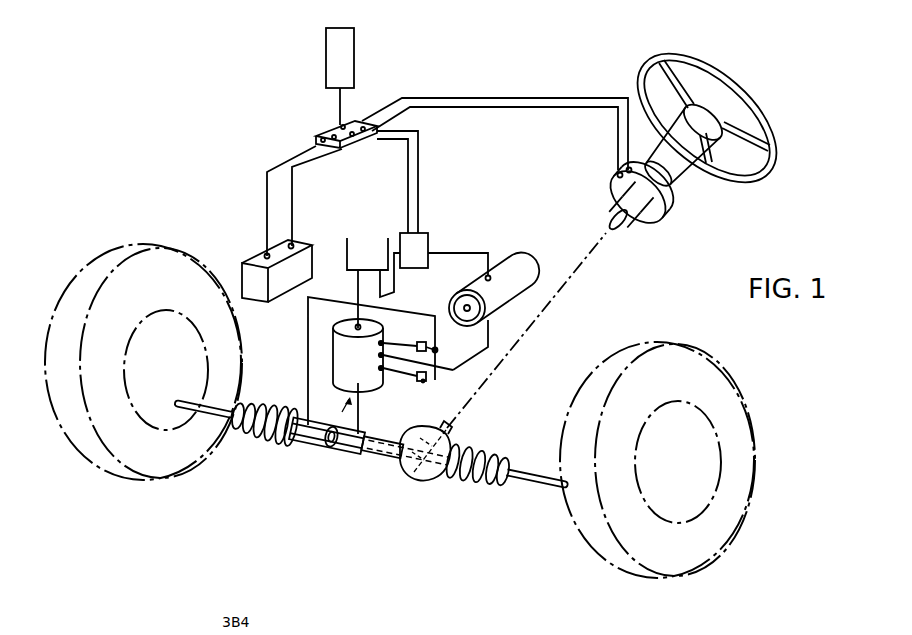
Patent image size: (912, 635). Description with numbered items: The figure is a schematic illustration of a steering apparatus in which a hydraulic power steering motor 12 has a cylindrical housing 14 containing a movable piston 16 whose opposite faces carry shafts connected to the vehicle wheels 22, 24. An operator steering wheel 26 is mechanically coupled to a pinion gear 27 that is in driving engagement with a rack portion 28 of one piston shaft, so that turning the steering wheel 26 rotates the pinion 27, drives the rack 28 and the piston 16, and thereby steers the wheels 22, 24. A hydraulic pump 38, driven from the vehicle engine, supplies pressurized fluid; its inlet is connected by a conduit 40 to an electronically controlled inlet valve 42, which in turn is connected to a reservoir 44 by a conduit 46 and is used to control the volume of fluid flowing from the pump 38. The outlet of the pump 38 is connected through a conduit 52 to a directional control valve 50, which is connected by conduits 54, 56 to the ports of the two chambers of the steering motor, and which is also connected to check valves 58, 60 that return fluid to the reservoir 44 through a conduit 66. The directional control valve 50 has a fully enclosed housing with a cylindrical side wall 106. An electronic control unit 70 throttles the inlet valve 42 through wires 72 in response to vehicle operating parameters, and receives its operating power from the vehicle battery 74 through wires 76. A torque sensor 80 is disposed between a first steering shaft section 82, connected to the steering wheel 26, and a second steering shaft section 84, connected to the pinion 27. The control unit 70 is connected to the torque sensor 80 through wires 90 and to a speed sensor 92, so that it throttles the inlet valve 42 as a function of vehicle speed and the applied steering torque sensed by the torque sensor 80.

The hydraulic power steering motor 12 is at (335, 460).
The cylindrical housing 14 is at (302, 447).
The movable piston 16 is at (328, 449).
The vehicle wheel 22 is at (58, 428).
The vehicle wheel 24 is at (752, 414).
The operator steering wheel 26 is at (653, 57).
The pinion gear 27 is at (450, 430).
The rack portion 28 is at (401, 468).
The hydraulic pump 38 is at (510, 277).
The conduit 40 is at (444, 254).
The inlet valve 42 is at (418, 250).
The reservoir 44 is at (346, 252).
The conduit 46 is at (390, 294).
The directional control valve 50 is at (333, 415).
The conduit 52 is at (488, 350).
The conduit 54 is at (307, 392).
The conduit 56 is at (363, 414).
The check valve 58 is at (422, 342).
The check valve 60 is at (423, 381).
The conduit 66 is at (436, 333).
The electronic control unit 70 is at (318, 126).
The wires 72 is at (410, 185).
The vehicle battery 74 is at (256, 262).
The wires 76 is at (290, 200).
The torque sensor 80 is at (662, 217).
The first steering shaft section 82 is at (668, 181).
The second steering shaft section 84 is at (633, 224).
The wires 90 is at (522, 97).
The speed sensor 92 is at (334, 52).
The cylindrical side wall 106 is at (335, 357).